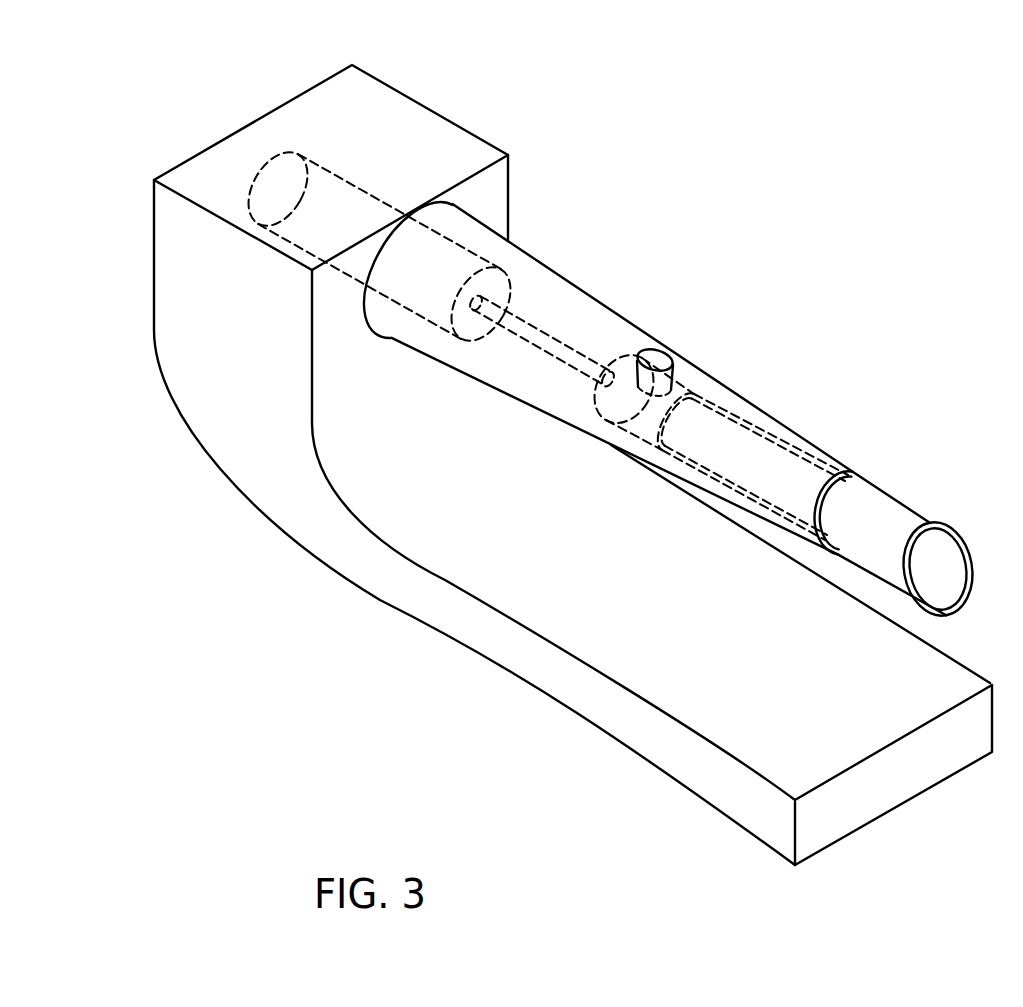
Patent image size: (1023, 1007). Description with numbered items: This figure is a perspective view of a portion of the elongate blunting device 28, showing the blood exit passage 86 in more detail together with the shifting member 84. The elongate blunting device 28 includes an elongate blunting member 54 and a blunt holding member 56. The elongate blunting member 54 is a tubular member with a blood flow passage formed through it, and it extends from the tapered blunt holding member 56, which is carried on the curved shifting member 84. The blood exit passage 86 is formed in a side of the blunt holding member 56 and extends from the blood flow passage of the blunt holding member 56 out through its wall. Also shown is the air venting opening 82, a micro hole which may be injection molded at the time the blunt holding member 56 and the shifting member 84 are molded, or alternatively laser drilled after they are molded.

The elongate blunting device 28 is at (452, 93).
The elongate blunting member 54 is at (880, 520).
The blunt holding member 56 is at (605, 326).
The air venting opening 82 is at (553, 341).
The shifting member 84 is at (532, 660).
The blood exit passage 86 is at (655, 366).